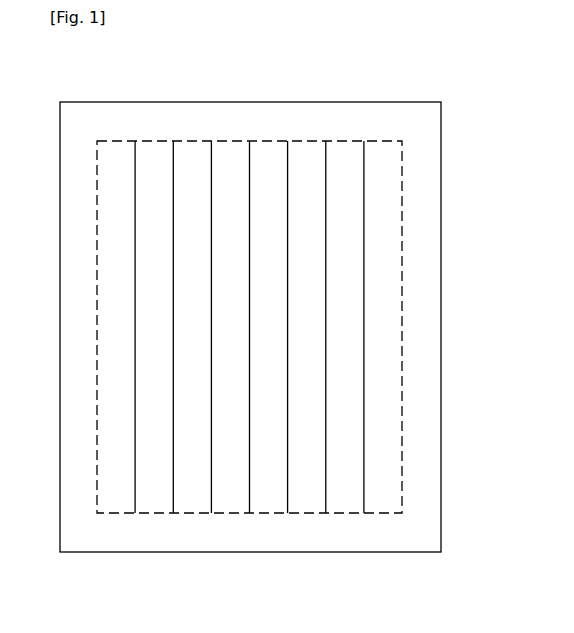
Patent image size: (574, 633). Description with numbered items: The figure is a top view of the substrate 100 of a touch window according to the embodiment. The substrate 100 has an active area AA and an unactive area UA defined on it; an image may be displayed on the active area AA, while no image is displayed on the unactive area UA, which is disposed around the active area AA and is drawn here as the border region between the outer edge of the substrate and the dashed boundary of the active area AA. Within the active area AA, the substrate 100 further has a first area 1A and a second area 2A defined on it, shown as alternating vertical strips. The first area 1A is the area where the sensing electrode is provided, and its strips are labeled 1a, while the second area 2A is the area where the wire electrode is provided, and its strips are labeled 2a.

The substrate 100 is at (441, 372).
The unactive area UA is at (430, 119).
The active area AA is at (392, 187).
The first area 1A is at (343, 63).
The first electrode 1a is at (119, 145).
The second area 2A is at (157, 592).
The second electrode 2a is at (159, 508).